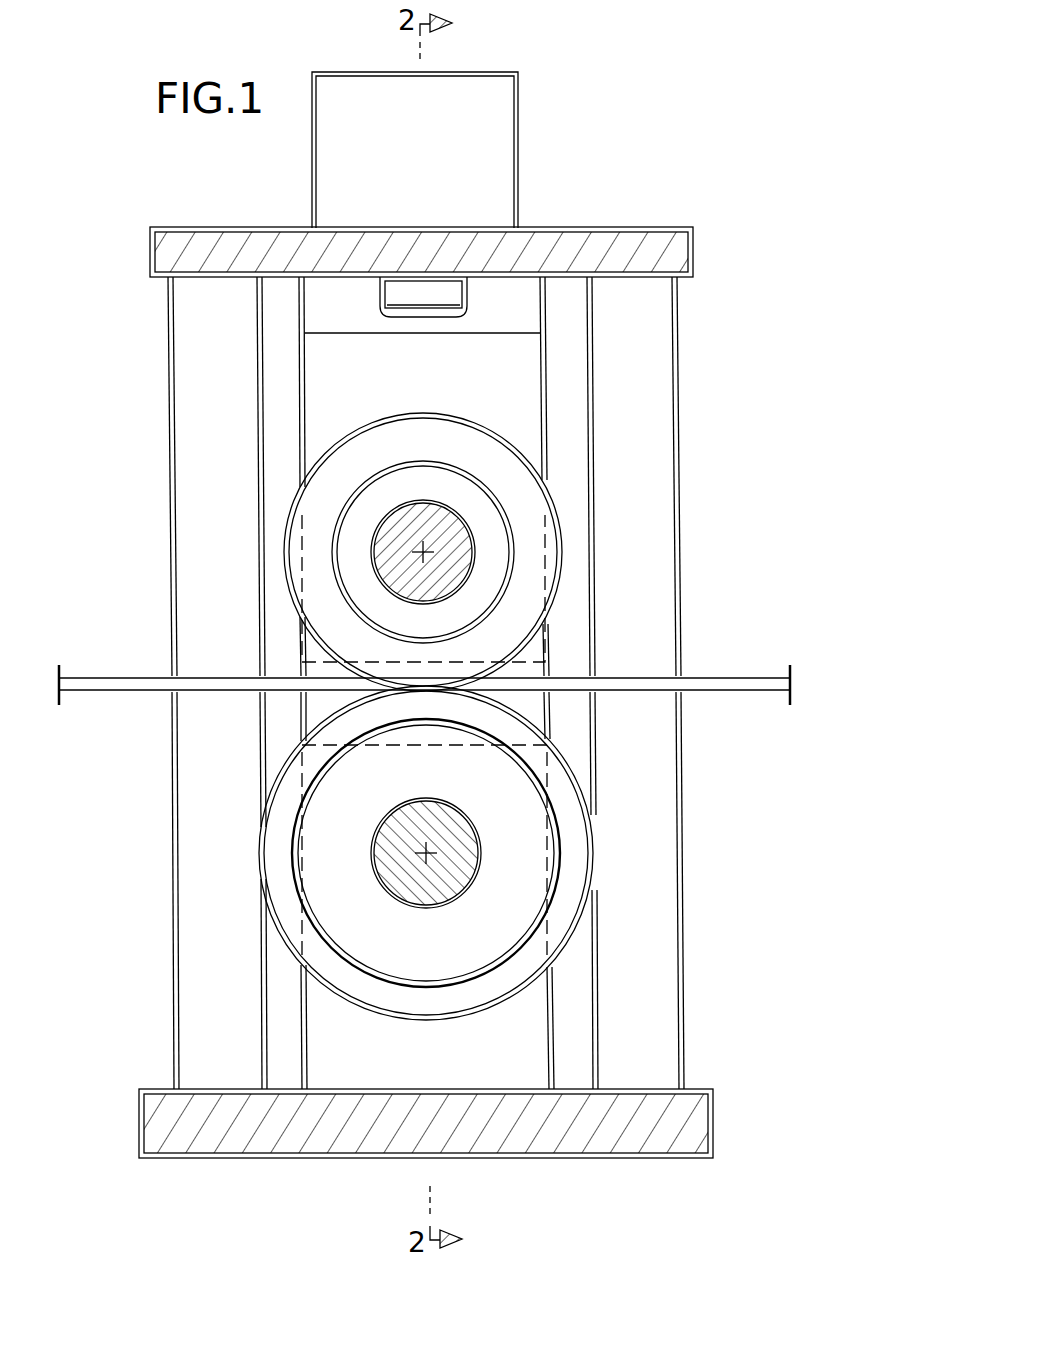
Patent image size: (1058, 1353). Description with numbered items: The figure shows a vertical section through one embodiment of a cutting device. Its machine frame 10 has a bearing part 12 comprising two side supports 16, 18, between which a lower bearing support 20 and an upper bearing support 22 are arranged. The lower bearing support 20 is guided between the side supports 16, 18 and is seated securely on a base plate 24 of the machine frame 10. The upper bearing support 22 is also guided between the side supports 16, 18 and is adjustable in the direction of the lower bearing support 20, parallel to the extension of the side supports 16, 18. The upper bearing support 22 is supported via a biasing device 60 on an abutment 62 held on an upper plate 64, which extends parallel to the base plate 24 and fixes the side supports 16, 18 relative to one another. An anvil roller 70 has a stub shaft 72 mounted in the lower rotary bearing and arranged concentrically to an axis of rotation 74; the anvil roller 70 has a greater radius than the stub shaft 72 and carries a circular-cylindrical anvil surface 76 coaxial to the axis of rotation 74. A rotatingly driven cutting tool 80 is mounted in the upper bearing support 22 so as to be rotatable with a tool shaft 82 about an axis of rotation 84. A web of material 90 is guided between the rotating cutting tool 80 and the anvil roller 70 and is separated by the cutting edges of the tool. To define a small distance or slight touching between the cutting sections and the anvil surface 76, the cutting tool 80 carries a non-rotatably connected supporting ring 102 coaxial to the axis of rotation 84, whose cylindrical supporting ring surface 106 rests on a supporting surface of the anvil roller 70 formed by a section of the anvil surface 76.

The machine frame 10 is at (696, 184).
The bearing part 12 is at (438, 683).
The side support 16 is at (205, 527).
The side support 18 is at (660, 455).
The lower bearing support 20 is at (325, 1025).
The upper bearing support 22 is at (318, 360).
The base plate 24 is at (700, 1128).
The biasing device 60 is at (467, 290).
The abutment 62 is at (510, 160).
The upper plate 64 is at (150, 260).
The anvil roller 70 is at (431, 853).
The stub shaft 72 is at (455, 885).
The axis of rotation 74 is at (457, 842).
The anvil surface 76 is at (493, 1010).
The rotating cutting tool 80 is at (437, 552).
The tool shaft 82 is at (460, 524).
The axis of rotation 84 is at (430, 551).
The web of material 90 is at (733, 680).
The supporting ring 102 is at (370, 452).
The supporting ring surface 106 is at (527, 452).